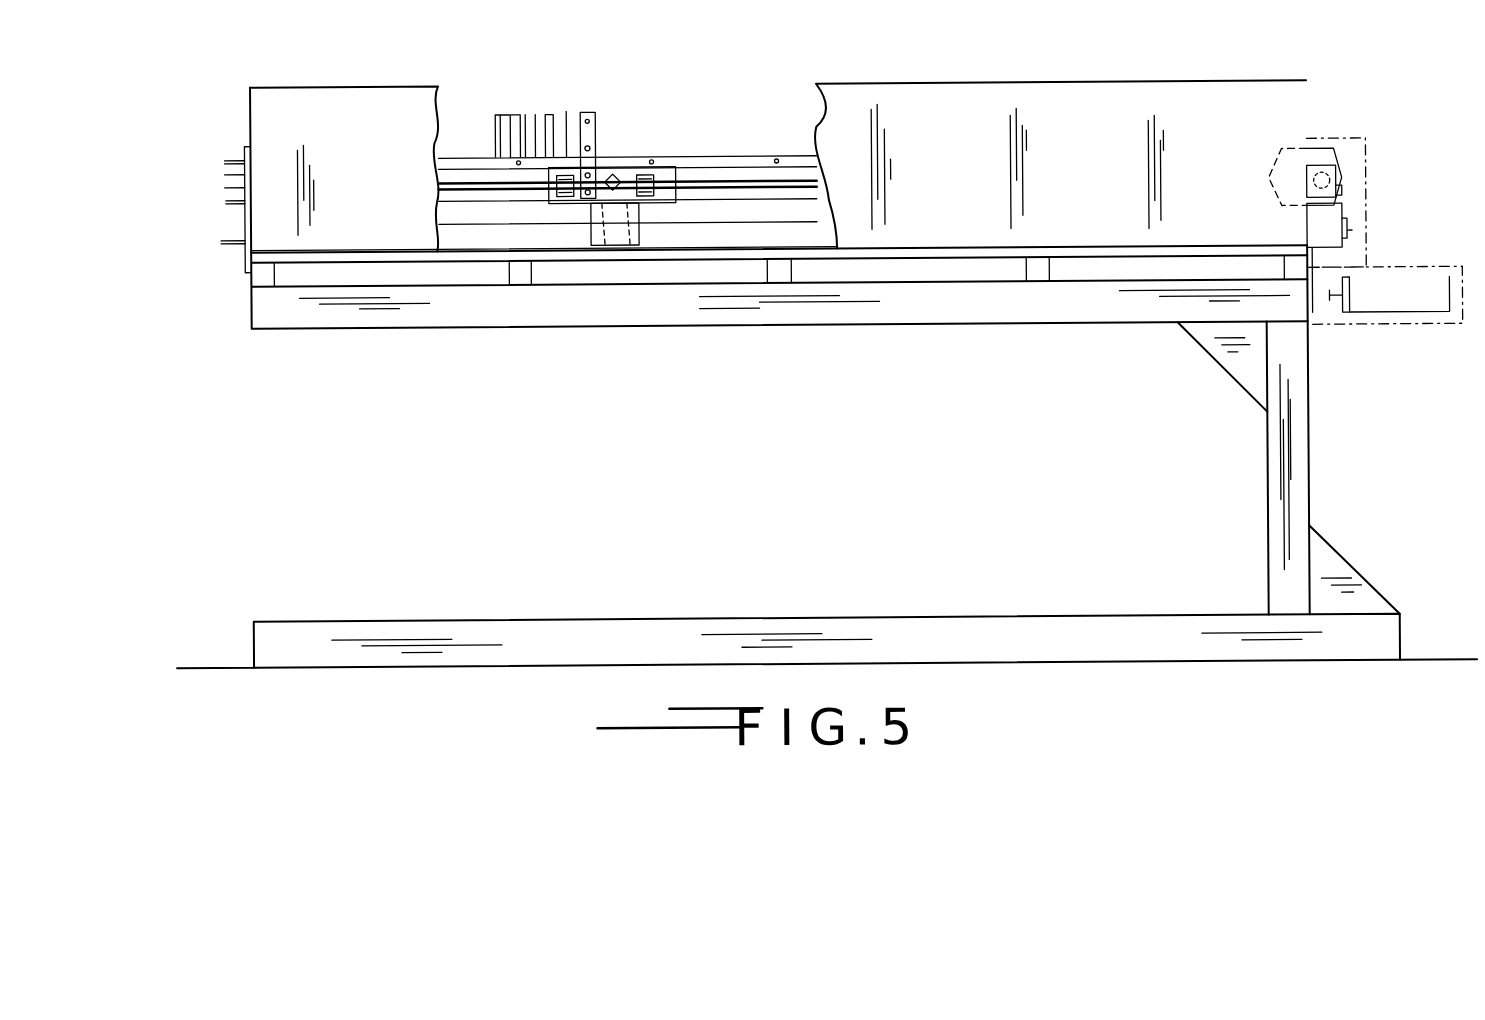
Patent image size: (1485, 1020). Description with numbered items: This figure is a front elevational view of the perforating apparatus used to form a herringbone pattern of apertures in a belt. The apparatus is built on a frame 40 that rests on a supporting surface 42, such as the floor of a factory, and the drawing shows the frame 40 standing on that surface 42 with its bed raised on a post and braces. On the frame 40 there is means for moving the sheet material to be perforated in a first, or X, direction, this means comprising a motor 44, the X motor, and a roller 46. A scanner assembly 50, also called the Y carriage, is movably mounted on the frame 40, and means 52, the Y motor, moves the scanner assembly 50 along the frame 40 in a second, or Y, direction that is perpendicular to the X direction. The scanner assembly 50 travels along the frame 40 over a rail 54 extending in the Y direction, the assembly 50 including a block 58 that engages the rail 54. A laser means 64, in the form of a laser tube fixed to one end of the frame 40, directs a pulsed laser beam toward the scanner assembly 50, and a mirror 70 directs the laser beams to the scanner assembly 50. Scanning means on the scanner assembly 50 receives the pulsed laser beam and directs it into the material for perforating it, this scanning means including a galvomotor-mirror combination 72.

The frame 40 is at (1100, 363).
The supporting surface 42 is at (193, 664).
The motor 44 is at (1350, 302).
The roller 46 is at (473, 238).
The scanner assembly 50 is at (608, 117).
The means for moving scanner assembly 52 is at (1345, 216).
The rail 54 is at (718, 185).
The block 58 is at (625, 195).
The laser means 64 is at (1323, 161).
The mirror 70 is at (1350, 171).
The galvomotor-mirror combination 72 is at (613, 159).